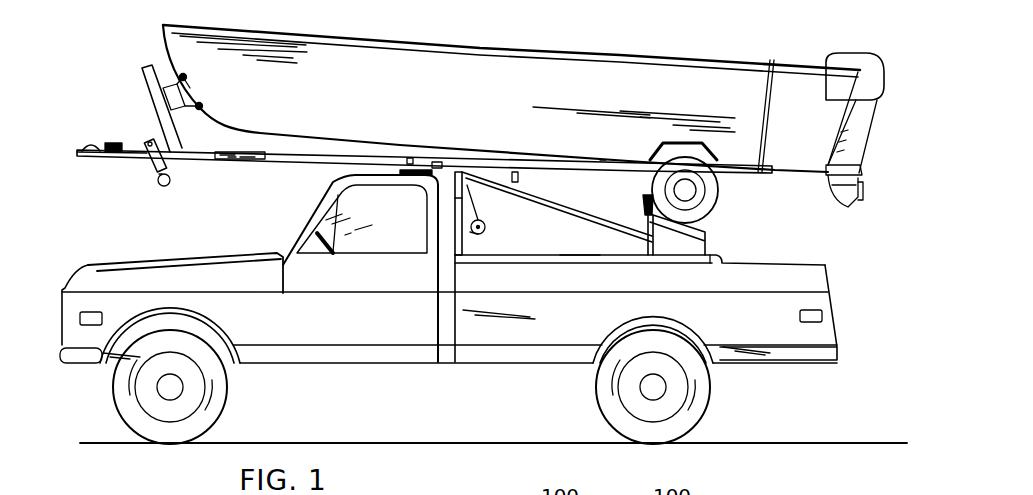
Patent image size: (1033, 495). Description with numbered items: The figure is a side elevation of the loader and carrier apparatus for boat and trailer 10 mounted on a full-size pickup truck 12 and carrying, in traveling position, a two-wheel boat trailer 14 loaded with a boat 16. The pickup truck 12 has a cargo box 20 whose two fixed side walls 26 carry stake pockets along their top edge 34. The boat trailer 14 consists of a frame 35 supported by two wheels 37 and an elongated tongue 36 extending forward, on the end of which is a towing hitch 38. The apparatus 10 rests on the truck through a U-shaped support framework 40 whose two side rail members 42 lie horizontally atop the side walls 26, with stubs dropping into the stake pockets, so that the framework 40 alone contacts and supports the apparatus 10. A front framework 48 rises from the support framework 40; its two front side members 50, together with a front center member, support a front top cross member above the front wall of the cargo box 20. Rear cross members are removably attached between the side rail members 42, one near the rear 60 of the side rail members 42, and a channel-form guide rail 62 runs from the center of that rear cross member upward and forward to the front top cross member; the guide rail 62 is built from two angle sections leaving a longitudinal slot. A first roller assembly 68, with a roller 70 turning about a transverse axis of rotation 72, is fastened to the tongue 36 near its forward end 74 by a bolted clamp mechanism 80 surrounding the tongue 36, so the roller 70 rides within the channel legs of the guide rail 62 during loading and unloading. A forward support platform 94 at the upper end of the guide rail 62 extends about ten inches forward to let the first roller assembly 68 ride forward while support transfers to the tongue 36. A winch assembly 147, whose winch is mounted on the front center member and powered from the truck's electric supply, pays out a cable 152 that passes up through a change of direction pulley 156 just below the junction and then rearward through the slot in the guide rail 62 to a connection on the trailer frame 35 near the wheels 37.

The loader and carrier apparatus for boat and trailer 10 is at (122, 95).
The pickup truck 12 is at (103, 262).
The boat trailer 14 is at (225, 175).
The boat 16 is at (716, 70).
The cargo box 20 is at (830, 292).
The side walls 26 is at (779, 286).
The top edge 34 is at (750, 260).
The frame 35 is at (603, 162).
The tongue 36 is at (240, 163).
The wheels 37 is at (712, 192).
The towing hitch 38 is at (100, 147).
The support framework 40 is at (532, 268).
The side rail members 42 is at (598, 258).
The front framework 48 is at (445, 221).
The front side members 50 is at (455, 199).
The rear 60 is at (712, 263).
The guide rail 62 is at (580, 212).
The first roller assembly 68 is at (118, 172).
The roller 70 is at (163, 188).
The transverse axis of rotation 72 is at (171, 181).
The forward end 74 is at (130, 151).
The bolted clamp mechanism 80 is at (153, 165).
The forward support platform 94 is at (427, 160).
The winch assembly 147 is at (484, 235).
The cable 152 is at (486, 226).
The change of direction pulley 156 is at (492, 183).